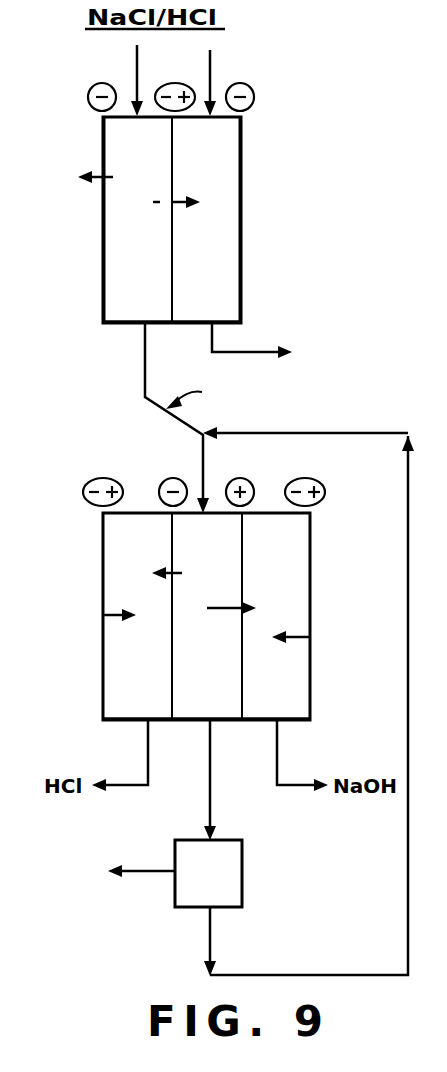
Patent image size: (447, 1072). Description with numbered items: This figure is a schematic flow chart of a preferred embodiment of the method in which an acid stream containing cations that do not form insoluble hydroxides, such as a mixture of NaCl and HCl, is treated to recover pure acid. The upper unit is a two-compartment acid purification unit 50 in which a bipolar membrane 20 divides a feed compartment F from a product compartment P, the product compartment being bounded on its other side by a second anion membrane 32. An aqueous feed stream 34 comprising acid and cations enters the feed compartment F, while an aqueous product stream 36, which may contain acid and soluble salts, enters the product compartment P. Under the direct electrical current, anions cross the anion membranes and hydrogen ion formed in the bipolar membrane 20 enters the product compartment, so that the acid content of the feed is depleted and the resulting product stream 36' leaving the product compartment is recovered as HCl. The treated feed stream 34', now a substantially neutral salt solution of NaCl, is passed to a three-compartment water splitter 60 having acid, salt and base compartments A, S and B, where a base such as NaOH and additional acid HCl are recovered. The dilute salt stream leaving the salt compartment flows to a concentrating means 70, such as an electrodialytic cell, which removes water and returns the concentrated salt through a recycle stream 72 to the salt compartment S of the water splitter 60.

The bipolar membrane 20 is at (172, 148).
The second anion membrane 32 is at (103, 143).
The aqueous feed stream 34 is at (110, 78).
The aqueous product stream 36 is at (238, 76).
The 2-compartment acid purification unit 50 is at (274, 176).
The treated feed stream 34' is at (169, 418).
The resulting product stream 36' is at (274, 332).
The 3-compartment water splitter 60 is at (336, 638).
The means of concentrating the dilute salt stream 70 is at (226, 886).
The recycle stream 72 is at (408, 513).